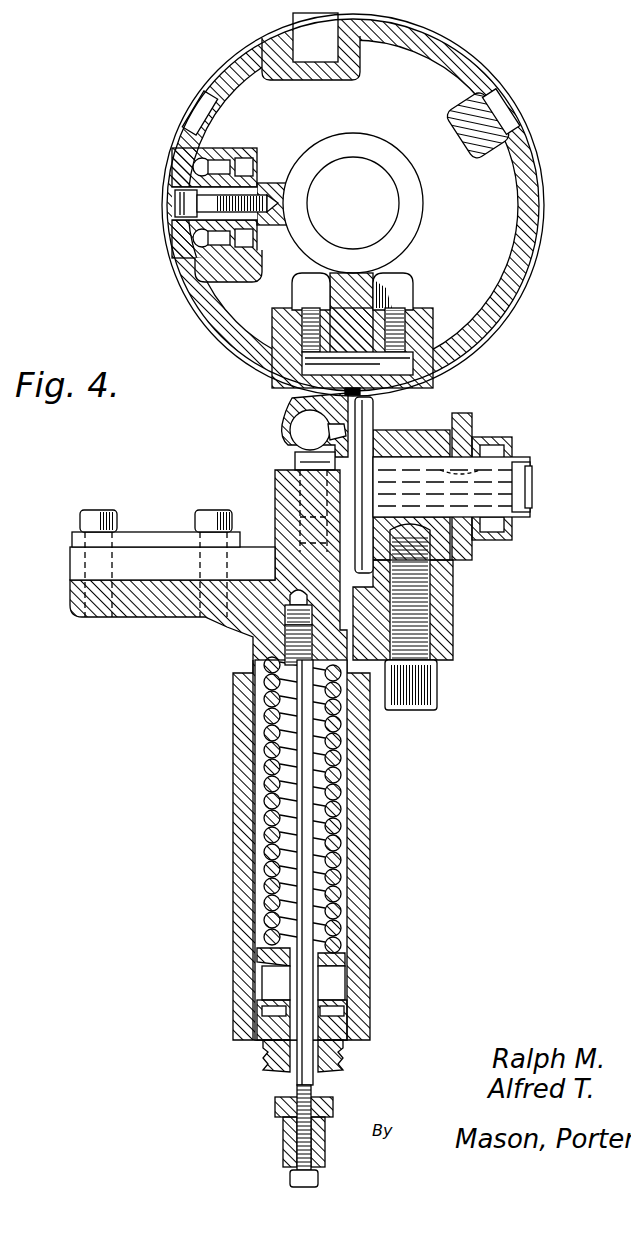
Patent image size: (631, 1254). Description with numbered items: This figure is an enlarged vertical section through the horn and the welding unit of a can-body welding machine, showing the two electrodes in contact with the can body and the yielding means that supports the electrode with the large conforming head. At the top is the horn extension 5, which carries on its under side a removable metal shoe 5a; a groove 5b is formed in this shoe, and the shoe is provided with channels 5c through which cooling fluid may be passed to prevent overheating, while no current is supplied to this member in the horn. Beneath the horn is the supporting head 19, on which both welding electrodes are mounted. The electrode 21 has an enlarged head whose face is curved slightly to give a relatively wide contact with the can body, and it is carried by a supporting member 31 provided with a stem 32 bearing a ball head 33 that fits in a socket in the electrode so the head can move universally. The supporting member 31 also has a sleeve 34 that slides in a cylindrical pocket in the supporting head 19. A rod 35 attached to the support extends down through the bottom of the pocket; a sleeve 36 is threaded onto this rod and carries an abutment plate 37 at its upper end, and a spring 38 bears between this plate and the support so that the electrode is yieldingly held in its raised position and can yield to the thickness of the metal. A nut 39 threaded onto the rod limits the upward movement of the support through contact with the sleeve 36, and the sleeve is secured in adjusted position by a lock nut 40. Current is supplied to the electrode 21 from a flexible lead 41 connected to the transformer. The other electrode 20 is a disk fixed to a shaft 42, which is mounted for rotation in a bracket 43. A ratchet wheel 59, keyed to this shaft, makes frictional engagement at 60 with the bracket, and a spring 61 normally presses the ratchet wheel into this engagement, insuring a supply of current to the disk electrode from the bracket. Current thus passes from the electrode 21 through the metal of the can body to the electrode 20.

The horn extension 5 is at (527, 240).
The metal shoe 5a is at (357, 337).
The groove 5b is at (363, 372).
The channels 5c is at (383, 338).
The supporting head 19 is at (370, 865).
The electrode 20 is at (363, 432).
The electrode 21 is at (300, 408).
The supporting member 31 is at (285, 487).
The stem 32 is at (296, 464).
The ball head 33 is at (308, 428).
The sleeve 34 is at (340, 830).
The rod 35 is at (303, 782).
The sleeve 36 is at (345, 1058).
The abutment plate 37 is at (337, 962).
The spring 38 is at (340, 933).
The nut 39 is at (290, 1127).
The lock nut 40 is at (272, 1058).
The lead 41 is at (172, 563).
The shaft 42 is at (480, 483).
The bracket 43 is at (437, 572).
The ratchet wheel 59 is at (473, 418).
The frictional engagement 60 is at (437, 427).
The spring 61 is at (513, 442).